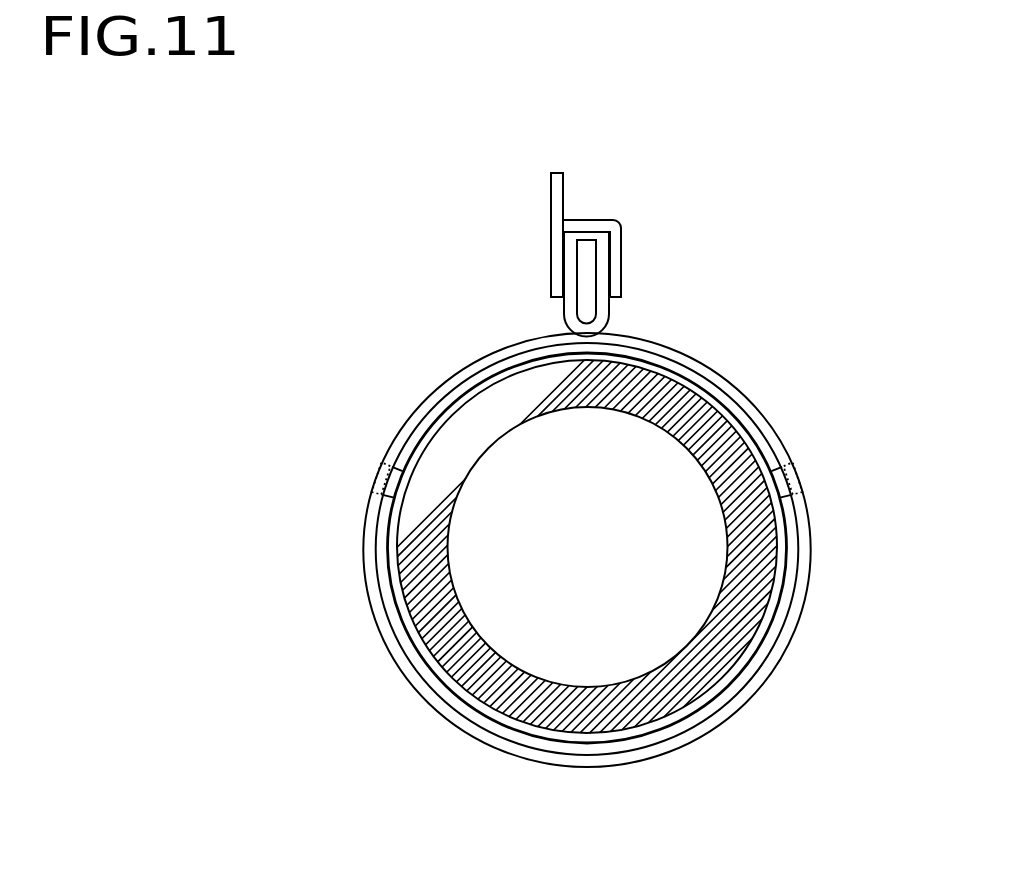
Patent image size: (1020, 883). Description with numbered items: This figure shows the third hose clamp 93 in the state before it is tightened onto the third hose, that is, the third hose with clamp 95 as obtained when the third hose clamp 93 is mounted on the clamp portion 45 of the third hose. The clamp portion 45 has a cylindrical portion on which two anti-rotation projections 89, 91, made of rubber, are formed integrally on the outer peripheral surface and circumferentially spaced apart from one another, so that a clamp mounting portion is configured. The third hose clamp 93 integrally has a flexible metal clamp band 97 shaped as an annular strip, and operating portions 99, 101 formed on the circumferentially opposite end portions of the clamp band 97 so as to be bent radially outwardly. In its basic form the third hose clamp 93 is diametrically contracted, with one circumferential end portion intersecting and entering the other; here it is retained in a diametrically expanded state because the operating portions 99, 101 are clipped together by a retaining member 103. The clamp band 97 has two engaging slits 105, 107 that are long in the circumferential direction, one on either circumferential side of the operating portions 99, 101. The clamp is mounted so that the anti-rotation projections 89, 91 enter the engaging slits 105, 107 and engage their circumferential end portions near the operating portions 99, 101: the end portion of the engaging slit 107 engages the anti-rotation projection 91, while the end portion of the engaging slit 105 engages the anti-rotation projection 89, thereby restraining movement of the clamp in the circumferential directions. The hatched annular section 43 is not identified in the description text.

The third hose with clamp 95 is at (313, 175).
The clamp band 97 is at (733, 707).
The third hose clamp 93 is at (502, 324).
The clamp portion 45 is at (433, 430).
The core member 43 is at (467, 665).
The engaging slit 107 is at (372, 474).
The engaging slit 105 is at (798, 477).
The anti-rotation projection 91 is at (378, 500).
The anti-rotation projection 89 is at (790, 502).
The retaining member 103 is at (618, 226).
The operating portion 101 is at (602, 265).
The operating portion 99 is at (574, 262).